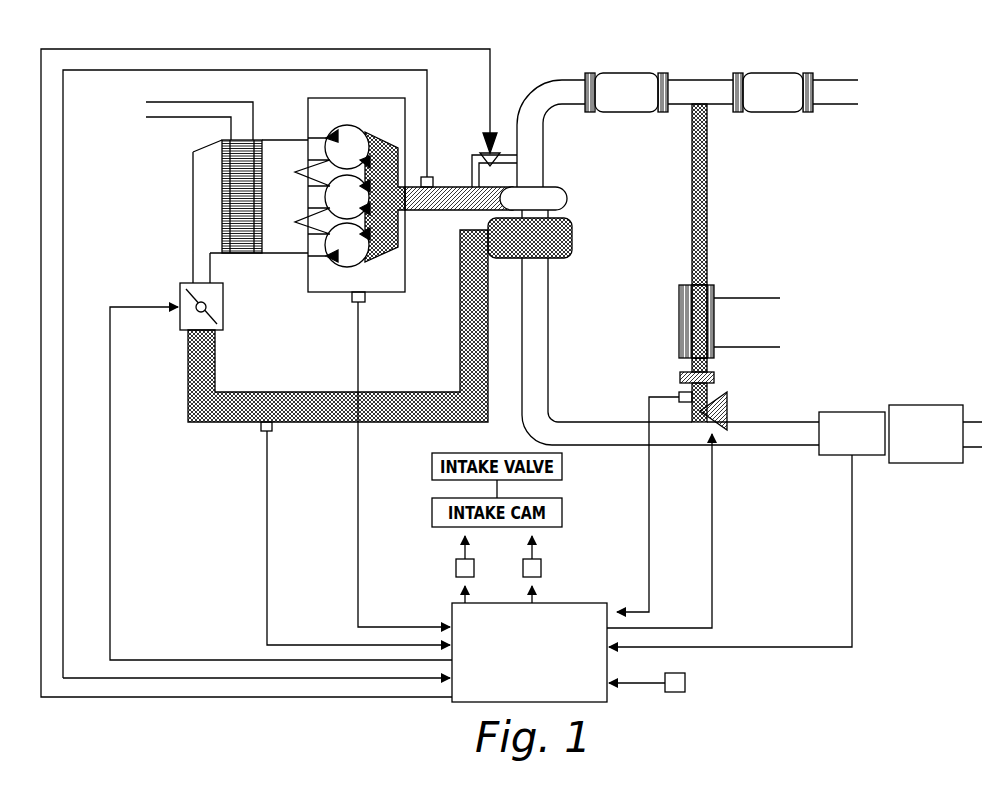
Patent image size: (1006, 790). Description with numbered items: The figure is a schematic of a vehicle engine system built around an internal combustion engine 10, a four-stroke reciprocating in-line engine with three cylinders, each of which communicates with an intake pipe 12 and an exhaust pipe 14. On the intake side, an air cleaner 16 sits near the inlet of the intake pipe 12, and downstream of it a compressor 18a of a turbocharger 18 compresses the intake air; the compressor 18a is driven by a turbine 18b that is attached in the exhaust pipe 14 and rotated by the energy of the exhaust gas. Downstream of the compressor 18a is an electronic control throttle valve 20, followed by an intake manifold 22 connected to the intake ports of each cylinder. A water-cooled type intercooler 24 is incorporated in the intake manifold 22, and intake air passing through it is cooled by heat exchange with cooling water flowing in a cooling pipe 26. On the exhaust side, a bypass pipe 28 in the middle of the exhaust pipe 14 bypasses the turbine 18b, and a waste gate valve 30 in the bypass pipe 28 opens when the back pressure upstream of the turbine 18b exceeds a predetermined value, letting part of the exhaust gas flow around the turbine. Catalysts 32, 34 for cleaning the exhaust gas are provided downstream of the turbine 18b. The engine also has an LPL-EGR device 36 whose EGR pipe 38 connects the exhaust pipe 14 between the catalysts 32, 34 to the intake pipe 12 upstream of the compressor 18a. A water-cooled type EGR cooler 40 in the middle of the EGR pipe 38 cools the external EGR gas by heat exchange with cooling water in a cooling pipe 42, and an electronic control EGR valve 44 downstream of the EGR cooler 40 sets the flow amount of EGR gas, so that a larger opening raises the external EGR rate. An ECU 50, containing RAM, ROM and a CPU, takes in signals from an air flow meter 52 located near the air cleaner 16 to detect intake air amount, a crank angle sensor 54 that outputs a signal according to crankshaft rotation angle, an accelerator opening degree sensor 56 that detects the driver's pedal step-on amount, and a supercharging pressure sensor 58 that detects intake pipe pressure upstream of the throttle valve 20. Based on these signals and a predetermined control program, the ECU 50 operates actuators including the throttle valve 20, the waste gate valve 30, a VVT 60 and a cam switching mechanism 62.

The internal combustion engine 10 is at (306, 299).
The intake pipe 12 is at (322, 422).
The exhaust pipe 14 is at (561, 78).
The air cleaner 16 is at (928, 405).
The turbocharger 18 is at (588, 221).
The compressor 18a is at (572, 238).
The turbine 18b is at (568, 198).
The electronic control throttle valve 20 is at (179, 283).
The intake manifold 22 is at (280, 140).
The water-cooled type intercooler 24 is at (240, 255).
The cooling pipe 26 is at (166, 118).
The bypass pipe 28 is at (505, 131).
The waste gate valve 30 is at (480, 158).
The catalyst 32 is at (628, 73).
The catalyst 34 is at (772, 73).
The LPL-EGR device 36 is at (742, 214).
The EGR pipe 38 is at (708, 160).
The water-cooled type EGR cooler 40 is at (679, 296).
The cooling pipe 42 is at (755, 298).
The electronic control EGR valve 44 is at (727, 404).
The ECU 50 is at (597, 603).
The air flow meter 52 is at (848, 412).
The crank angle sensor 54 is at (348, 310).
The accelerator opening degree sensor 56 is at (686, 683).
The supercharging pressure sensor 58 is at (258, 430).
The VVT 60 is at (456, 565).
The cam switching mechanism 62 is at (679, 397).